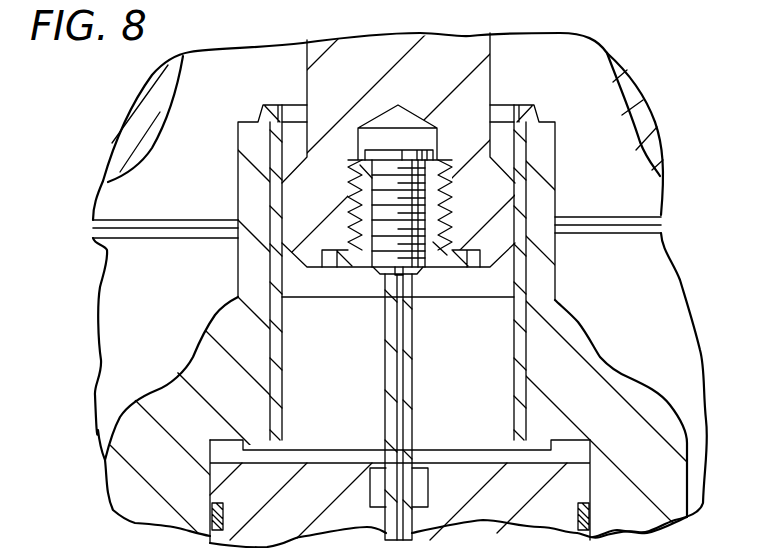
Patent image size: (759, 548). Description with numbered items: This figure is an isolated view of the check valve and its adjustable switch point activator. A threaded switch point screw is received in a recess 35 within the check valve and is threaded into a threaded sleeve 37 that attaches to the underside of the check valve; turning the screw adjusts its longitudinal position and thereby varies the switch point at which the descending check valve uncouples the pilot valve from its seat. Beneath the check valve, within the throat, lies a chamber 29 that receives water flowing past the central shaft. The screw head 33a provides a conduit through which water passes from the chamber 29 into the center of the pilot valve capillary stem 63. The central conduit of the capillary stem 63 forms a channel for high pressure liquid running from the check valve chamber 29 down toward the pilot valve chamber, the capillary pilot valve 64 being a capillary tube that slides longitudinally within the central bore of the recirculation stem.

The recess 35 is at (427, 137).
The threaded sleeve 37 is at (356, 258).
The screw head 33a is at (397, 276).
The chamber 29 is at (488, 433).
The pilot valve capillary stem 63 is at (393, 400).
The capillary pilot valve 64 is at (413, 387).